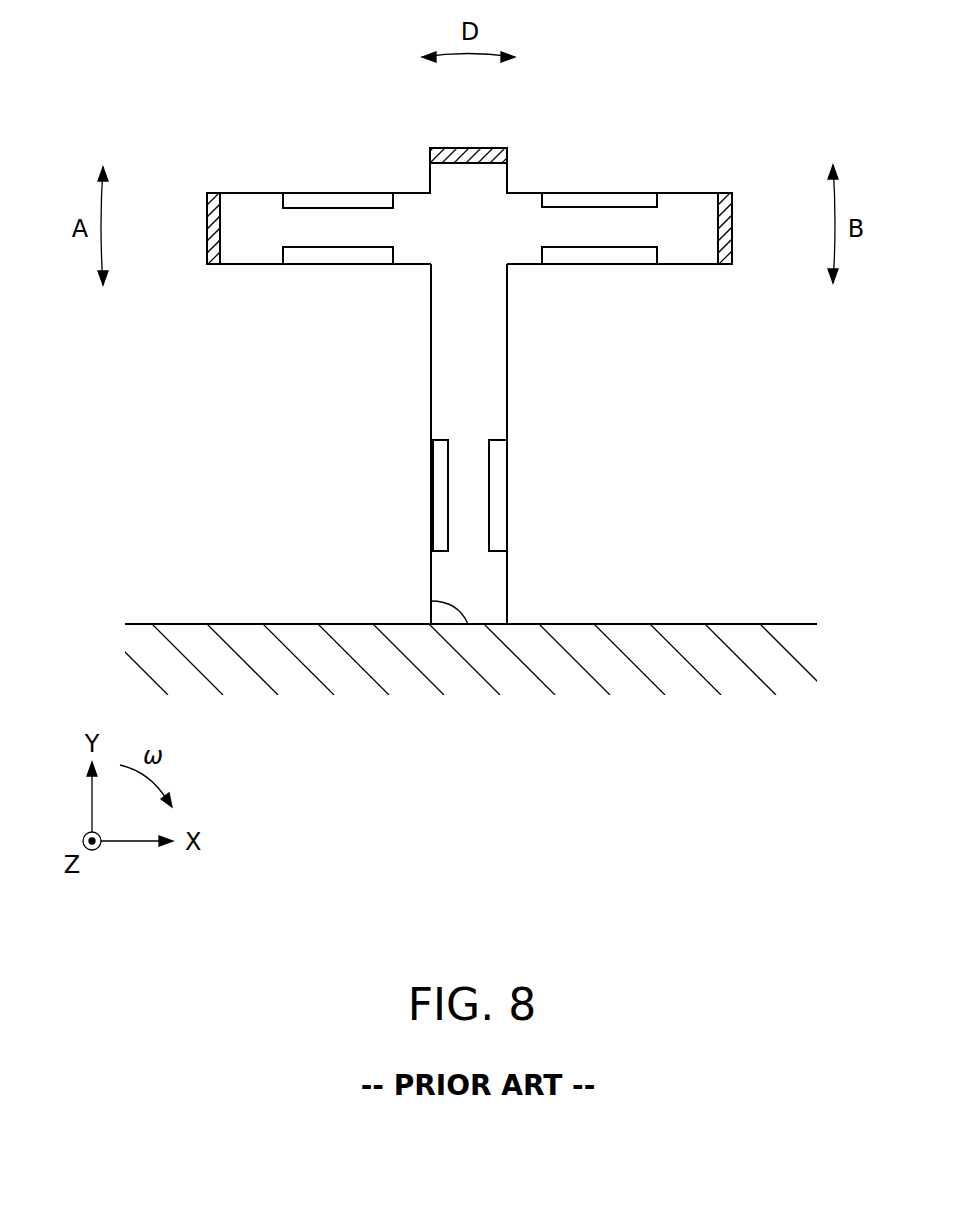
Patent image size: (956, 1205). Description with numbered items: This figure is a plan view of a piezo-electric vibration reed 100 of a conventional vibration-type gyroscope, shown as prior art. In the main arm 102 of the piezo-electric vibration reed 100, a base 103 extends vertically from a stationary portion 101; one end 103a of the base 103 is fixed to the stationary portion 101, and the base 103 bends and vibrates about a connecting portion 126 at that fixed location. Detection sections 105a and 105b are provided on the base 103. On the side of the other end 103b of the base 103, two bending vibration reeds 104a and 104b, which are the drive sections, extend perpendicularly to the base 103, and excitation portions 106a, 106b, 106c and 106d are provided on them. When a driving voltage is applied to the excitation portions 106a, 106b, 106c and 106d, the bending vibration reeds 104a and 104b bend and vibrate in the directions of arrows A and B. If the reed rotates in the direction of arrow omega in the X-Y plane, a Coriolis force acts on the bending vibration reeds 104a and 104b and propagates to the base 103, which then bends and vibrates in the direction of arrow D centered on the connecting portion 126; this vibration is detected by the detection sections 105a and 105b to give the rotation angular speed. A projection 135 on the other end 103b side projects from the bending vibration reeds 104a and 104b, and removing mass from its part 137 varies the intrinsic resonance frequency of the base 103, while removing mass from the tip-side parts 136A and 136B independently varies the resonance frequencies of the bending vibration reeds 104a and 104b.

The piezo-electric vibration reed 100 is at (685, 72).
The stationary portion 101 is at (742, 632).
The main arm 102 is at (553, 177).
The base 103 is at (437, 388).
The one end of the base 103a is at (468, 603).
The another end of the base 103b is at (470, 268).
The bending vibration reed 104a is at (232, 226).
The bending vibration reed 104b is at (704, 222).
The detection section 105a is at (498, 500).
The detection section 105b is at (438, 498).
The excitation portion 106a is at (340, 198).
The excitation portion 106b is at (339, 255).
The excitation portion 106c is at (625, 195).
The excitation portion 106d is at (630, 263).
The connecting portion 126 is at (431, 601).
The projection 135 is at (476, 172).
The part of the projection 137 is at (478, 156).
The tip-side part of bending vibration reed 136A is at (209, 220).
The tip-side part of bending vibration reed 136B is at (718, 228).